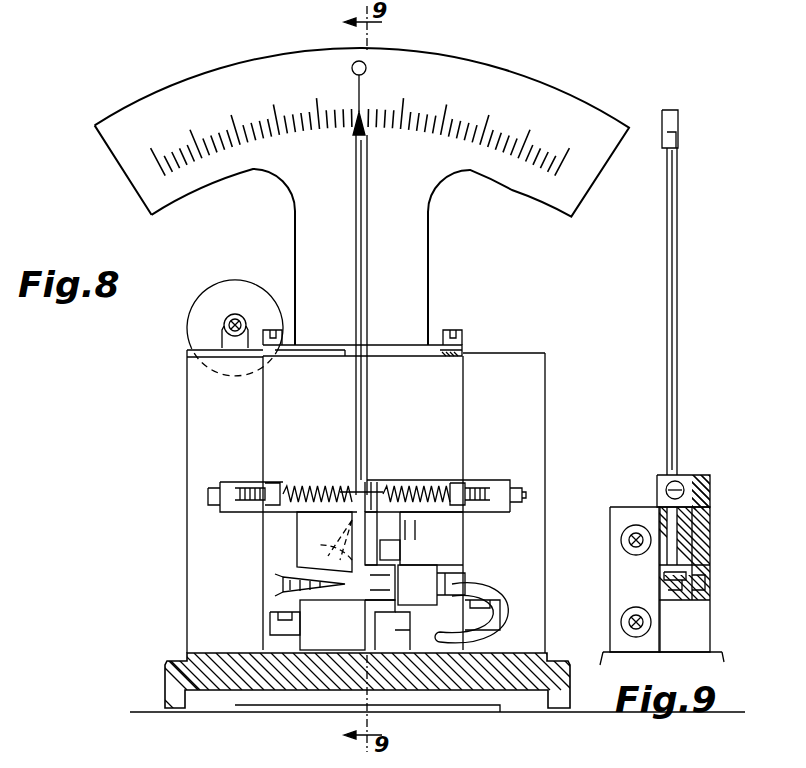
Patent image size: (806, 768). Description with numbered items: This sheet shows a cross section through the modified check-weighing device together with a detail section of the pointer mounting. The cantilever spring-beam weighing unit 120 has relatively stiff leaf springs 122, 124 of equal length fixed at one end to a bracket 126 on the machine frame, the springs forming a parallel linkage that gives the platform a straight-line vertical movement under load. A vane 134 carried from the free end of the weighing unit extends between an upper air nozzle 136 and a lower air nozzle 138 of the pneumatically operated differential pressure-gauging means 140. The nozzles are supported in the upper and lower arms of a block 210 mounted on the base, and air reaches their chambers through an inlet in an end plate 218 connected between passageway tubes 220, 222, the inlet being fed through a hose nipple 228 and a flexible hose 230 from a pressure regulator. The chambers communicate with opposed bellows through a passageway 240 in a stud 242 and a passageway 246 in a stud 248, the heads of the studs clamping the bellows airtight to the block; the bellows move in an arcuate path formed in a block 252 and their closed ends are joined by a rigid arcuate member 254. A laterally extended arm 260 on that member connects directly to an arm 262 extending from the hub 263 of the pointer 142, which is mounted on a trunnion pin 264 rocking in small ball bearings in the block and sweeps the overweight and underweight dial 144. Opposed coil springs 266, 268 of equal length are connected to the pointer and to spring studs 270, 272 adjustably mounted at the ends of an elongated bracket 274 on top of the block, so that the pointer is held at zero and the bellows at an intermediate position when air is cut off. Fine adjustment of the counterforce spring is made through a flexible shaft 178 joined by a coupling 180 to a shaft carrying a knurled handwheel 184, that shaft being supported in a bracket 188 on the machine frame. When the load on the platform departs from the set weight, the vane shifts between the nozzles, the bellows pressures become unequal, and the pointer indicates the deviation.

In FIG. 8, the dial 144 is at (548, 82).
In FIG. 8, the pointer 142 is at (368, 195).
In FIG. 9, the pointer 142 is at (677, 270).
In FIG. 8, the cantilever spring-beam weighing unit 120 is at (468, 323).
In FIG. 8, the cantilever leaf spring 122 is at (281, 360).
In FIG. 8, the bracket 126 is at (459, 413).
In FIG. 8, the knurled handwheel 184 is at (237, 282).
In FIG. 8, the flexible shaft 178 is at (247, 316).
In FIG. 8, the coupling 180 is at (222, 326).
In FIG. 8, the bracket 188 is at (186, 351).
In FIG. 8, the spring stud 270 is at (243, 487).
In FIG. 8, the coil spring 266 is at (334, 490).
In FIG. 8, the coil spring 268 is at (396, 490).
In FIG. 8, the spring stud 272 is at (473, 488).
In FIG. 8, the elongated bracket 274 is at (378, 480).
In FIG. 9, the elongated bracket 274 is at (700, 482).
In FIG. 8, the pneumatically operated differential pressure-gauging means 140 is at (288, 550).
In FIG. 8, the trunnion pin 264 is at (324, 542).
In FIG. 9, the trunnion pin 264 is at (688, 600).
In FIG. 8, the arm 262 is at (326, 540).
In FIG. 8, the block 210 is at (401, 530).
In FIG. 9, the block 210 is at (703, 537).
In FIG. 8, the upper air nozzle 136 is at (410, 560).
In FIG. 8, the passageway tube 220 is at (405, 578).
In FIG. 8, the vane 134 is at (431, 585).
In FIG. 8, the end plate 218 is at (440, 570).
In FIG. 8, the hose nipple 228 is at (456, 579).
In FIG. 8, the arm 260 is at (333, 586).
In FIG. 8, the rigid arcuate member 254 is at (333, 586).
In FIG. 8, the hub 263 is at (332, 625).
In FIG. 8, the lower air nozzle 138 is at (388, 606).
In FIG. 8, the passageway tube 222 is at (396, 628).
In FIG. 8, the cantilever leaf spring 124 is at (272, 621).
In FIG. 8, the flexible hose 230 is at (487, 632).
In FIG. 9, the block 252 is at (610, 521).
In FIG. 9, the passageway 240 is at (621, 539).
In FIG. 9, the stud 242 is at (630, 547).
In FIG. 9, the passageway 246 is at (621, 621).
In FIG. 9, the stud 248 is at (629, 626).